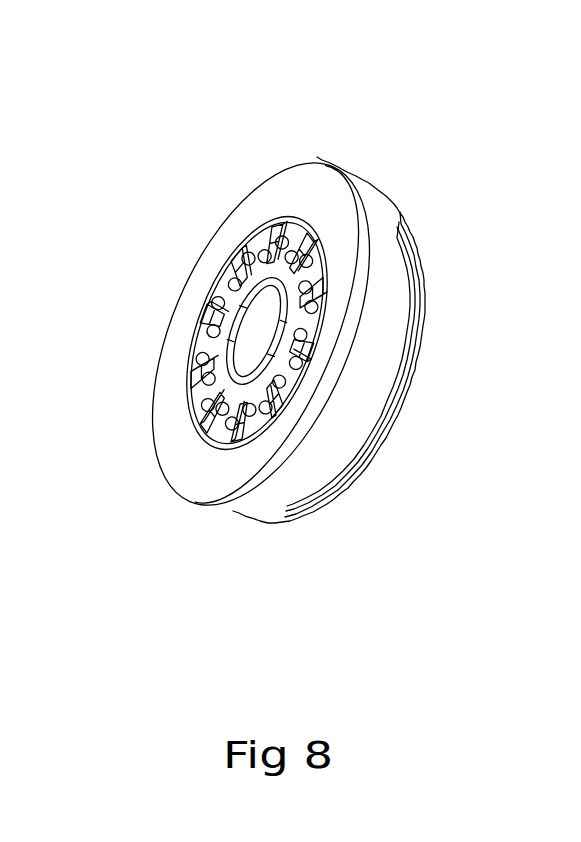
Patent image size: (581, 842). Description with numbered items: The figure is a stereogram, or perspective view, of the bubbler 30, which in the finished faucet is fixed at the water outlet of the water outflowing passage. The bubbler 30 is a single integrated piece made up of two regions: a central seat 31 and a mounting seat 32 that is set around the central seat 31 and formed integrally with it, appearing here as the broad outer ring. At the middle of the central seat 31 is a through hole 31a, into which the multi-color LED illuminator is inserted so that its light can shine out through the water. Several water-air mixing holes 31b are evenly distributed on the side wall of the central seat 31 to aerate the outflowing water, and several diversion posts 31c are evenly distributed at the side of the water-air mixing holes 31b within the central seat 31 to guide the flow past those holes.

The bubbler 30 is at (283, 280).
The central seat 31 is at (274, 293).
The through hole 31a is at (256, 347).
The water-air mixing holes 31b is at (212, 357).
The diversion posts 31c is at (297, 340).
The mounting seat 32 is at (380, 220).